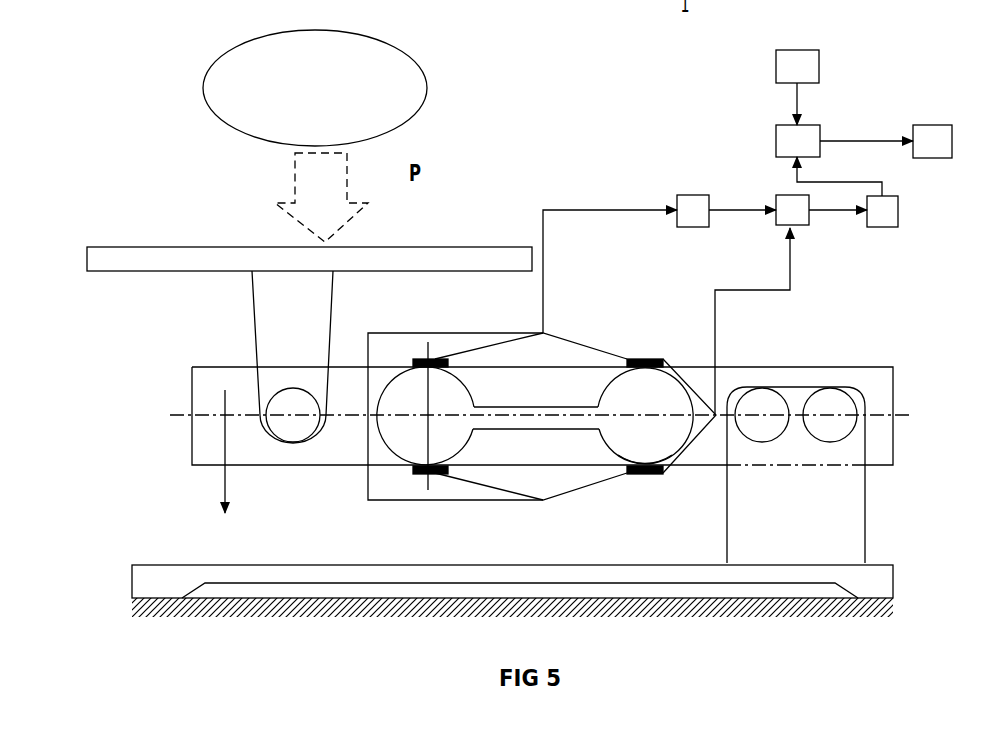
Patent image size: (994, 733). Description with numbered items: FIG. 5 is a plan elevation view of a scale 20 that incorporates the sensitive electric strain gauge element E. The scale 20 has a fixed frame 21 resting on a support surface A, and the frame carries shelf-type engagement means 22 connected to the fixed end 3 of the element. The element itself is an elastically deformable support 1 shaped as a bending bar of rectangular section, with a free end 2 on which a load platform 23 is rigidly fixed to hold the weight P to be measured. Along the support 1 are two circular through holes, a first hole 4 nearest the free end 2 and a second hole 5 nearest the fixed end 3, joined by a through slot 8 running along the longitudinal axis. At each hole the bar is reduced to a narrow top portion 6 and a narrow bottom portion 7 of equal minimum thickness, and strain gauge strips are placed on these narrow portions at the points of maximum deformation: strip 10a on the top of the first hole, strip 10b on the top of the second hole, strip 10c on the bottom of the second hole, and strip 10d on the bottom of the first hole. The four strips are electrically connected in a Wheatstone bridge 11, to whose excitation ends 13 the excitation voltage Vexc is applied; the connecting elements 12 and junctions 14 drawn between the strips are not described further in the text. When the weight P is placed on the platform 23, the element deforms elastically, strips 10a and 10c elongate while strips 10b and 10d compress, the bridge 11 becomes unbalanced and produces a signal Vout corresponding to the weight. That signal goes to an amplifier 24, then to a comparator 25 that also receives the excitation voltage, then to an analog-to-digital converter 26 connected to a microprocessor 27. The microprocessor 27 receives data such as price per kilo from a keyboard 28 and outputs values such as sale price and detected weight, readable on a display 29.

The elastically deformable support 1 is at (377, 452).
The free end 2 is at (255, 450).
The fixed end 3 is at (865, 382).
The first through hole 4 is at (447, 442).
The second through hole 5 is at (600, 397).
The narrow top portion 6 is at (430, 368).
The narrow bottom portion 7 is at (650, 466).
The through slot 8 is at (502, 407).
The strain gauge strip 10a is at (420, 357).
The strain gauge strip 10b is at (659, 330).
The strain gauge strip 10c is at (660, 475).
The strain gauge strip 10d is at (420, 476).
The first Wheatstone bridge 11 is at (607, 298).
The tension band 12 is at (585, 343).
The excitation ends 13 is at (722, 378).
The junction 14 is at (546, 332).
The scale 20 is at (88, 127).
The fixed frame 21 is at (253, 575).
The shelf-type engagement means 22 is at (852, 550).
The load platform 23 is at (452, 247).
The amplifier 24 is at (693, 195).
The comparator 25 is at (800, 227).
The analog-to-digital converter 26 is at (898, 210).
The microprocessor 27 is at (775, 131).
The keyboard 28 is at (808, 50).
The display 29 is at (940, 125).
The sensitive electric strain gauge element E is at (150, 515).
The support surface A is at (749, 597).